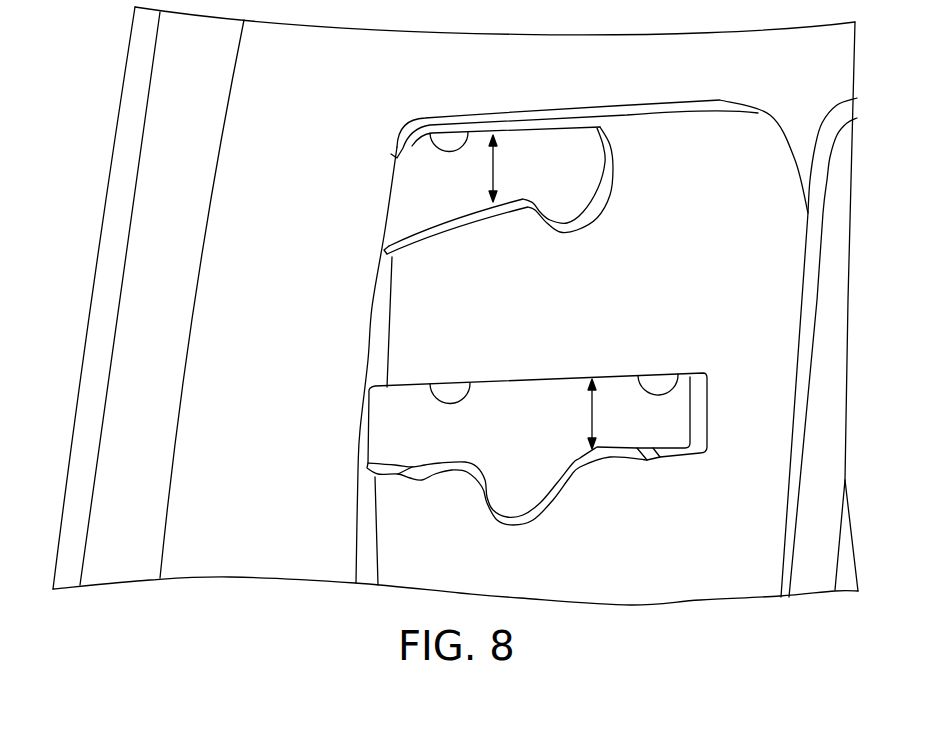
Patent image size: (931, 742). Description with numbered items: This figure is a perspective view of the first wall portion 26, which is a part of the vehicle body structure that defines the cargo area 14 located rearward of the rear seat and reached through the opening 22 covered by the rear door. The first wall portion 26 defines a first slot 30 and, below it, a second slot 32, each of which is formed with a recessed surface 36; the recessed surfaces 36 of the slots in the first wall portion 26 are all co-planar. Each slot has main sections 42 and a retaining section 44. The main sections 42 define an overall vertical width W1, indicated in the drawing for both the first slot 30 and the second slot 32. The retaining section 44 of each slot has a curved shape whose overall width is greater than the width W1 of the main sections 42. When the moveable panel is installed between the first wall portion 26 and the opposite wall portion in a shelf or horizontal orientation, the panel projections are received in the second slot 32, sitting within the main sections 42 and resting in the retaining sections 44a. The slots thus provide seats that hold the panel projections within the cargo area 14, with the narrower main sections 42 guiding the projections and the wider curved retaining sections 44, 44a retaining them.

The cargo area 14 is at (263, 515).
The opening 22 is at (167, 203).
The first wall portion 26 is at (728, 150).
The first slot 30 is at (440, 223).
The second slot 32 is at (447, 470).
The recessed surfaces 36 is at (563, 155).
The main sections 42 is at (430, 134).
The retaining section 44 is at (597, 222).
The retaining sections 44a is at (415, 468).
The overall vertical width W1 is at (488, 170).